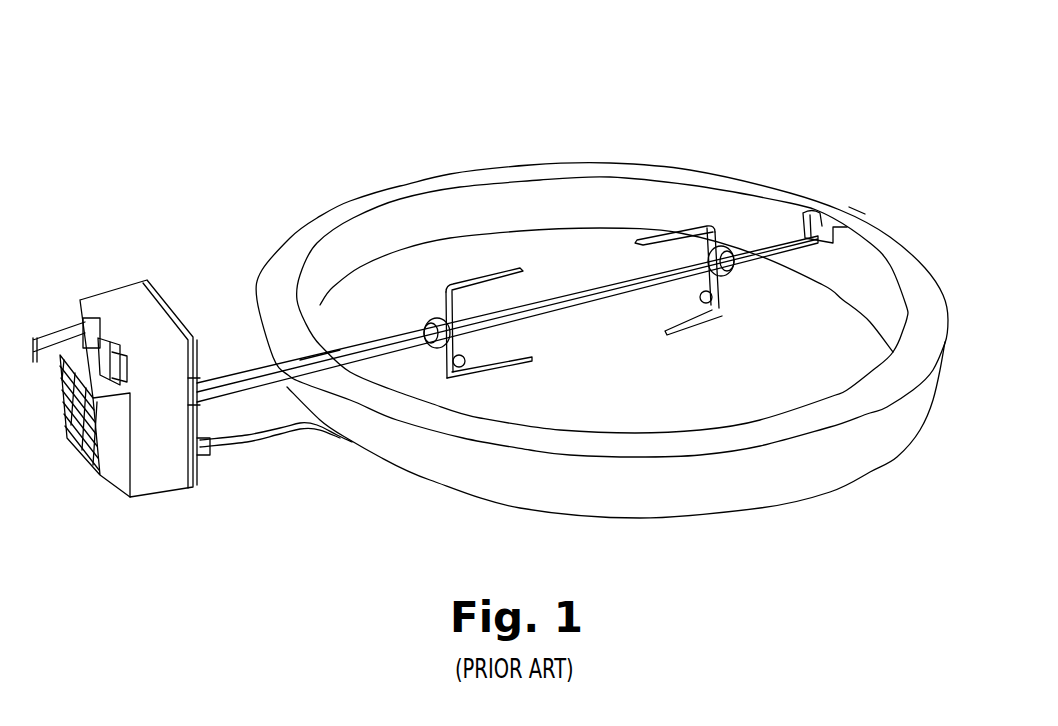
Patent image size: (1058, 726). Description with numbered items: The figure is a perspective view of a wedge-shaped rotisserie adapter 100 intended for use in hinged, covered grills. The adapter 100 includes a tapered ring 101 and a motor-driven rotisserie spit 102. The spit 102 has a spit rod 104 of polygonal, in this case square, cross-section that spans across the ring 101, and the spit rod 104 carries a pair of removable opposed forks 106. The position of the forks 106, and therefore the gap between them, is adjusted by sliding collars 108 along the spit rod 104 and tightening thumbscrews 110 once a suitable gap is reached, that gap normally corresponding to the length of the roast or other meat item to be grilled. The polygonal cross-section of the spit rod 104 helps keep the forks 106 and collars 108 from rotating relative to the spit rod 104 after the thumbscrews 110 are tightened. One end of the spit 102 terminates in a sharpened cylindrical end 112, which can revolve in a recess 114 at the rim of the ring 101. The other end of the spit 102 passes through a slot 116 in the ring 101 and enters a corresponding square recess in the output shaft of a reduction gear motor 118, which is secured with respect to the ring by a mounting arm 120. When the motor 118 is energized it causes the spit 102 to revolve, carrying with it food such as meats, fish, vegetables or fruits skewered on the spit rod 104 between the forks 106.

The wedge-shaped rotisserie adapter 100 is at (372, 92).
The tapered ring 101 is at (353, 204).
The motor-driven rotisserie spit 102 is at (577, 247).
The spit rod 104 is at (420, 358).
The removable opposed forks 106 is at (514, 380).
The collars 108 is at (462, 312).
The thumbscrews 110 is at (466, 360).
The sharpened cylindrical end 112 is at (803, 212).
The recess 114 is at (857, 210).
The slot 116 is at (328, 352).
The reduction gear motor 118 is at (166, 498).
The mounting arm 120 is at (268, 446).